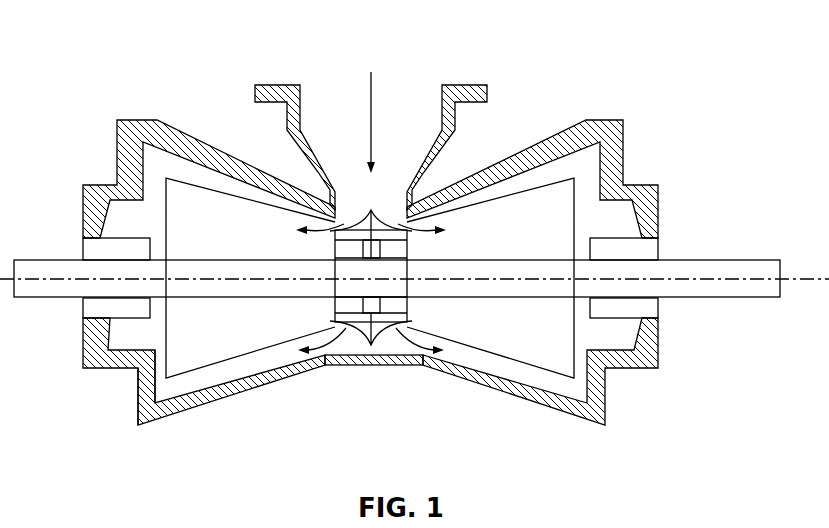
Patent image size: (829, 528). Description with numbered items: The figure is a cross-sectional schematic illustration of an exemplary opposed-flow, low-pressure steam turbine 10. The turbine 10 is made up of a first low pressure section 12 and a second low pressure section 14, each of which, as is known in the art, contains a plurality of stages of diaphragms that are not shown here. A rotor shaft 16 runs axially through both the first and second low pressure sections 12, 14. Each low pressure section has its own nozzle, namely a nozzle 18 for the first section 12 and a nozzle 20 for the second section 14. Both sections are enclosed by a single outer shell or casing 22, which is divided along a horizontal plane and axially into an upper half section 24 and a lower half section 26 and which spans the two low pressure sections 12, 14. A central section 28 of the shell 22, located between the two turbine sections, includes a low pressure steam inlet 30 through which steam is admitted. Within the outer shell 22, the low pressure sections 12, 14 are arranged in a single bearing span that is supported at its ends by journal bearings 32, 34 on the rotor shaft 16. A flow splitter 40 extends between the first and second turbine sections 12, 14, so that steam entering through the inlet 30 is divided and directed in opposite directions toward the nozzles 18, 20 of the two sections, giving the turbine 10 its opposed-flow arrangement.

The opposed-flow low-pressure steam turbine 10 is at (99, 63).
The first low pressure section 12 is at (181, 118).
The second low pressure section 14 is at (561, 118).
The rotor shaft 16 is at (684, 258).
The nozzle 18 is at (325, 305).
The nozzle 20 is at (419, 305).
The outer shell or casing 22 is at (212, 412).
The upper half section 24 is at (127, 142).
The lower half section 26 is at (160, 424).
The central section 28 is at (374, 382).
The low pressure steam inlet 30 is at (388, 79).
The journal bearing 32 is at (128, 320).
The journal bearing 34 is at (620, 234).
The flow splitter 40 is at (368, 209).